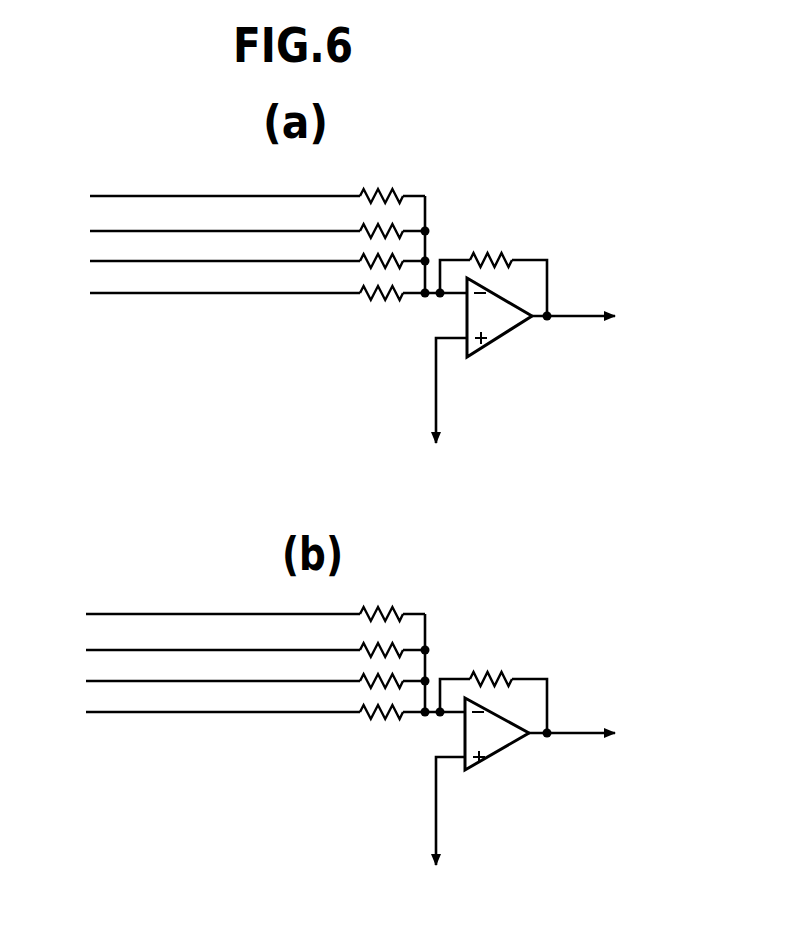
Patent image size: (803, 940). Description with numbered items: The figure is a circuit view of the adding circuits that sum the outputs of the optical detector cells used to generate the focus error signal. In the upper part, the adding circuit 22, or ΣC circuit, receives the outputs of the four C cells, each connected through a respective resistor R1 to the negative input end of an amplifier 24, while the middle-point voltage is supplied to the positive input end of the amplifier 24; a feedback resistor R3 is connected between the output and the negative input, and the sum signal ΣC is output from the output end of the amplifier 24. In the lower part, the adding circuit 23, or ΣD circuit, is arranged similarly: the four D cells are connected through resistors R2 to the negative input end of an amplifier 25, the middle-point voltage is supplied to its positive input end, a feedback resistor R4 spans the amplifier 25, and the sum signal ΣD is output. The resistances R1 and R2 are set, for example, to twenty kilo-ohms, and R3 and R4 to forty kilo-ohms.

The adding circuit (ΣC circuit) 22 is at (375, 311).
The adding circuit (ΣD circuit) 23 is at (374, 733).
The amplifier 24 is at (492, 346).
The amplifier 25 is at (488, 760).
The resistor R1 is at (364, 235).
The resistor R2 is at (364, 654).
The resistor R3 is at (491, 247).
The resistor R4 is at (491, 666).